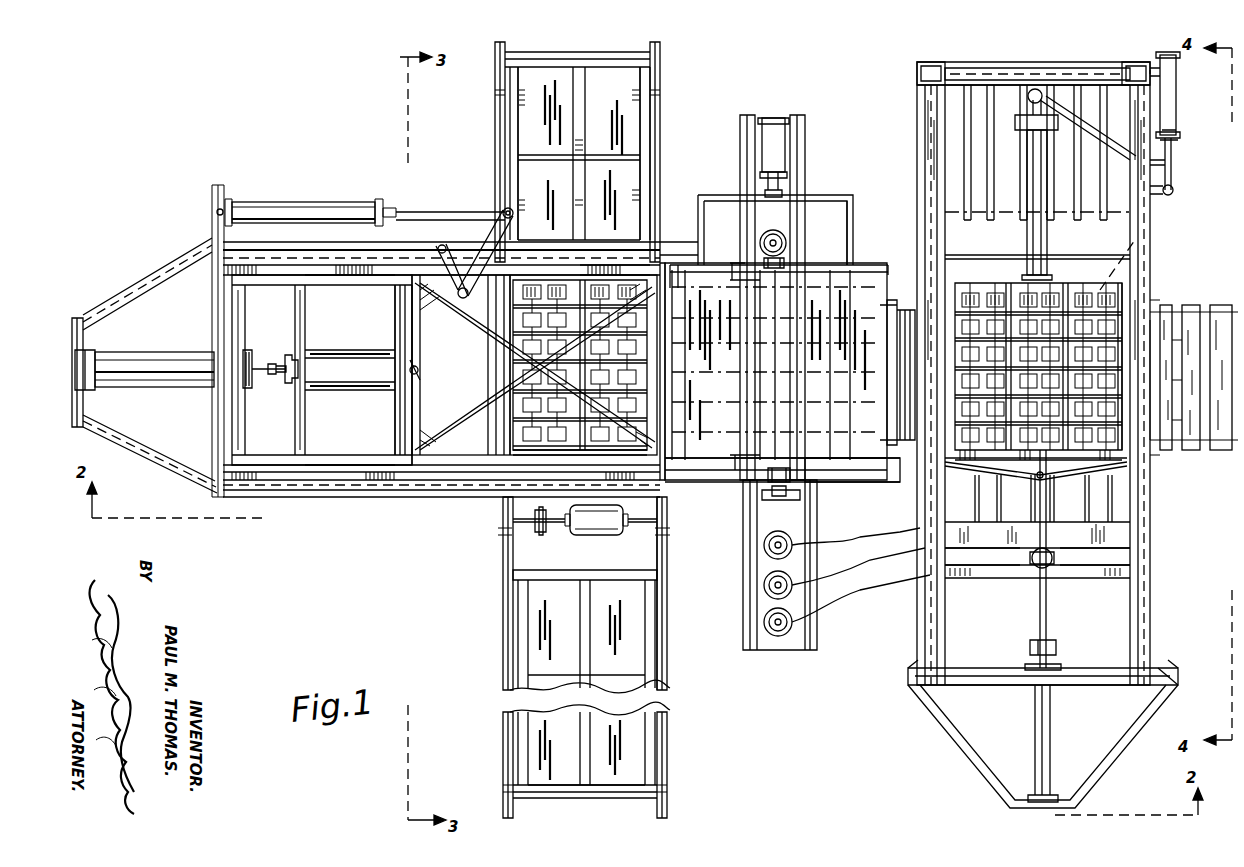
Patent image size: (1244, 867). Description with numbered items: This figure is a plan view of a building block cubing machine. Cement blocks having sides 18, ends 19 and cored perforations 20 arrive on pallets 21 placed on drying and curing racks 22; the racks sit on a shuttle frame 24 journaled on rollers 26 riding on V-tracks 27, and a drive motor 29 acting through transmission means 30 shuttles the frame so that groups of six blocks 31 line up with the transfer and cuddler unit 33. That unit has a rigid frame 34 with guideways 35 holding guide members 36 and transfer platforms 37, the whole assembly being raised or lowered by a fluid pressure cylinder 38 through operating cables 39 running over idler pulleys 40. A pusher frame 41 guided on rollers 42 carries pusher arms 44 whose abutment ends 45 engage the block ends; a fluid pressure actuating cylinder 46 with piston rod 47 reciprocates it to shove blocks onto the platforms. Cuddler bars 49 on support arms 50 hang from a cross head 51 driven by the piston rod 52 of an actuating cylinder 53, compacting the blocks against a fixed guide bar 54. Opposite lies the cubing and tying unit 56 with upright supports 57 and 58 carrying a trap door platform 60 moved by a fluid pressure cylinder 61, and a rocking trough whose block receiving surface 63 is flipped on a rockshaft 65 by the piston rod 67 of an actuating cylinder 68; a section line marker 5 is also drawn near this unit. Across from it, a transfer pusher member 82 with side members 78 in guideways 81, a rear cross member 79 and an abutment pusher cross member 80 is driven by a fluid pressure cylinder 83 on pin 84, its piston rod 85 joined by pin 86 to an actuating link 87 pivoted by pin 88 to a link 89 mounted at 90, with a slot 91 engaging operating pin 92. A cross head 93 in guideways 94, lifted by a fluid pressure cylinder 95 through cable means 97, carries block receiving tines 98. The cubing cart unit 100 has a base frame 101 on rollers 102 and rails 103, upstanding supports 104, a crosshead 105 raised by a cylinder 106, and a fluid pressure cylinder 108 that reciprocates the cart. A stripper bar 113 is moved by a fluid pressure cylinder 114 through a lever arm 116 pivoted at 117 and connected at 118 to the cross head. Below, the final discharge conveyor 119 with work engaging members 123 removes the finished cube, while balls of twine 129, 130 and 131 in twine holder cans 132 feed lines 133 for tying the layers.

The tray cell 5 is at (1156, 222).
The sides 18 is at (520, 432).
The ends 19 is at (520, 414).
The cored perforations 20 is at (655, 340).
The pallets 21 is at (520, 118).
The drying and curing racks 22 is at (650, 108).
The shuttle frame 24 is at (590, 798).
The rollers 26 is at (660, 52).
The V-tracks 27 is at (668, 622).
The drive motor 29 is at (608, 532).
The transmission means 30 is at (542, 532).
The blocks 31 is at (502, 476).
The transfer and cuddler unit 33 is at (852, 478).
The rigid frame 34 is at (750, 500).
The guideways 35 is at (800, 500).
The guide members 36 is at (790, 260).
The transfer platforms 37 is at (776, 371).
The fluid pressure cylinder 38 is at (785, 238).
The operating cables 39 is at (778, 306).
The idler pulleys 40 is at (755, 262).
The pusher frame 41 is at (248, 432).
The rollers 42 is at (275, 270).
The pusher arms 44 is at (366, 395).
The abutment ends 45 is at (520, 275).
The fluid pressure actuating cylinder 46 is at (143, 372).
The piston rod 47 is at (264, 362).
The cuddler bars 49 is at (870, 266).
The support arms 50 is at (855, 220).
The cross head 51 is at (830, 197).
The piston rod 52 is at (790, 180).
The actuating cylinder 53 is at (785, 135).
The fixed guide bar 54 is at (716, 480).
The cubing and tying unit 56 is at (915, 626).
The upright support 57 is at (918, 684).
The upright support 58 is at (1172, 678).
The trap door platform 60 is at (940, 403).
The fluid pressure cylinder 61 is at (1050, 718).
The block receiving surface 63 is at (948, 294).
The rockshaft 65 is at (1078, 256).
The piston rod 67 is at (1124, 245).
The actuating cylinder 68 is at (1170, 150).
The side members 78 is at (606, 265).
The rear cross member 79 is at (398, 426).
The abutment pusher cross member 80 is at (668, 274).
The guideways 81 is at (330, 275).
The transfer pusher member 82 is at (388, 318).
The fluid pressure cylinder 83 is at (292, 212).
The pin 84 is at (212, 212).
The piston rod 85 is at (445, 216).
The pin 86 is at (514, 210).
The actuating link 87 is at (490, 258).
The pin 88 is at (464, 288).
The link 89 is at (442, 250).
The pivot 90 is at (436, 250).
The slot 91 is at (418, 370).
The operating pin 92 is at (416, 380).
The cross head 93 is at (985, 68).
The guideways 94 is at (918, 66).
The fluid pressure cylinder 95 is at (1162, 70).
The cable means 97 is at (1018, 68).
The block receiving tines 98 is at (1022, 178).
The cubing cart unit 100 is at (1082, 564).
The base frame 101 is at (920, 516).
The rollers 102 is at (955, 535).
The rails 103 is at (925, 488).
The upstanding supports 104 is at (942, 552).
The crosshead 105 is at (1032, 535).
The cylinder 106 is at (1034, 566).
The fluid pressure cylinder 108 is at (1032, 244).
The stripper bar 113 is at (1088, 75).
The fluid pressure cylinder 114 is at (1186, 121).
The lever arm 116 is at (1174, 190).
The pivot 117 is at (1172, 166).
The connection 118 is at (1040, 90).
The final discharge conveyor 119 is at (1214, 304).
The work engaging members 123 is at (1182, 448).
The ball of twine 129 is at (765, 624).
The ball of twine 130 is at (765, 586).
The ball of twine 131 is at (765, 546).
The twine holder cans 132 is at (786, 642).
The lines 133 is at (858, 580).